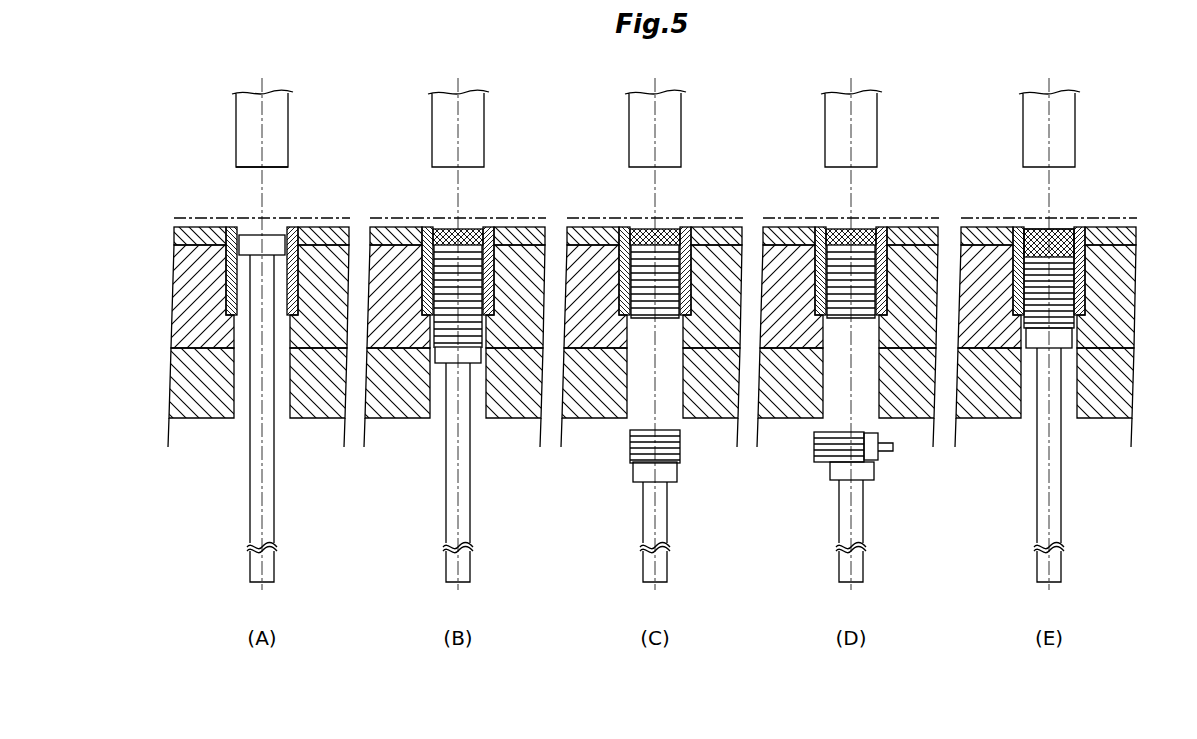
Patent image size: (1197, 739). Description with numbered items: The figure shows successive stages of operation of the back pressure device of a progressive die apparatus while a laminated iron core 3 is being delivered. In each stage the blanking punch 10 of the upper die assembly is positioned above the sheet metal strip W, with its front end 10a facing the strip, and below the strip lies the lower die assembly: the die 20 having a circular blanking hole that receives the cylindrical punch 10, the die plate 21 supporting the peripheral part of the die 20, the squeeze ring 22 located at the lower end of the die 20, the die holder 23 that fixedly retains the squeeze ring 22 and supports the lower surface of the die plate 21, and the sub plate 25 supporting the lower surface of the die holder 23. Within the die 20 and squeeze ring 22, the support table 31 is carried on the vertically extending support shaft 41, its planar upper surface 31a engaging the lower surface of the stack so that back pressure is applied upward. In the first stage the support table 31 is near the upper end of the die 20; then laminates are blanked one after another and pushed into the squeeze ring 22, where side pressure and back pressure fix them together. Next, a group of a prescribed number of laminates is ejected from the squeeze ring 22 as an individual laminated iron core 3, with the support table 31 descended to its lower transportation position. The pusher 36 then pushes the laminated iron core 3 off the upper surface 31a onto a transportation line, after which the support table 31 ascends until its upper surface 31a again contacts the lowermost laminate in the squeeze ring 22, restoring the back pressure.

The blanking punch 10 is at (630, 128).
The front end of the punch 10a is at (286, 144).
The sheet metal strip W is at (655, 190).
The die plate 21 is at (655, 213).
The die 20 is at (653, 264).
The squeeze ring 22 is at (712, 380).
The die holder 23 is at (595, 401).
The sub plate 25 is at (650, 447).
The support table 31 is at (617, 371).
The upper surface of the support table 31a is at (655, 350).
The support shaft 41 is at (631, 418).
The laminated iron core 3 is at (852, 360).
The pusher 36 is at (894, 455).